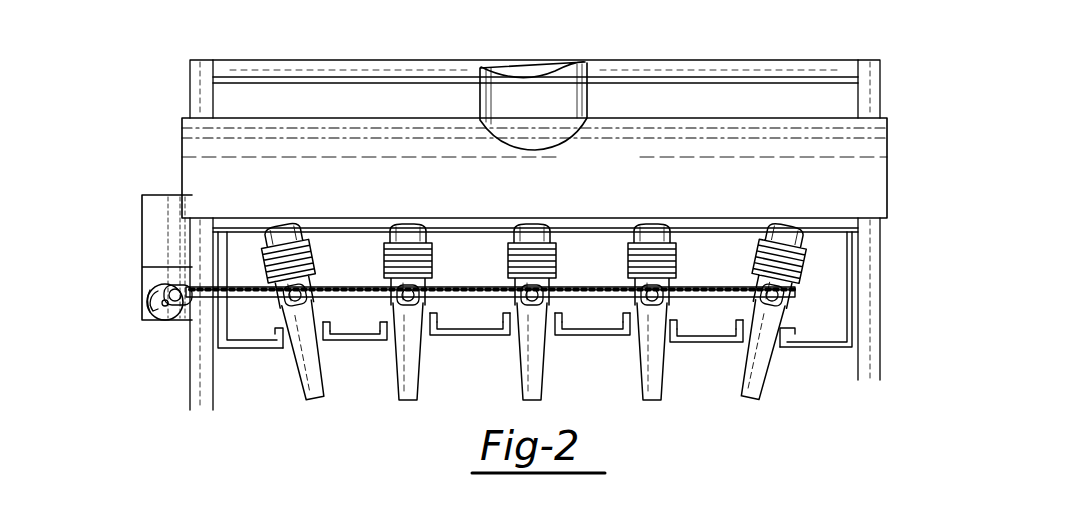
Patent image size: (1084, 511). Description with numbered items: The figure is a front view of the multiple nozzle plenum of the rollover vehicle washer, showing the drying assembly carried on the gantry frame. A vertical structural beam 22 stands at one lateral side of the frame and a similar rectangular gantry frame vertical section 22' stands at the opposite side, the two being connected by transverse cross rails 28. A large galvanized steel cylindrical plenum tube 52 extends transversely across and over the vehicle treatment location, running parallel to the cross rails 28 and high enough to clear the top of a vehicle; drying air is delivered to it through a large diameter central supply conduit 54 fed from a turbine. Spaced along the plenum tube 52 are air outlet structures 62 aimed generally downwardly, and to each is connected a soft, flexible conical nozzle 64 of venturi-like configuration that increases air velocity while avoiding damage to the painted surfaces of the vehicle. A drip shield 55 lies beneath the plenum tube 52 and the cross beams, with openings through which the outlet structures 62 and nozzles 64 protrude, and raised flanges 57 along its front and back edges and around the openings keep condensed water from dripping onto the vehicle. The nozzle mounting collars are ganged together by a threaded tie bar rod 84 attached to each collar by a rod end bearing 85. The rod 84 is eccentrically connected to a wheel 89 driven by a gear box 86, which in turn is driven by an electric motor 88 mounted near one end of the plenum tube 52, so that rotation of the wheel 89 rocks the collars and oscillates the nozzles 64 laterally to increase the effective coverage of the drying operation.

The vertical structural beam 22 is at (892, 209).
The gantry frame vertical section 22' is at (165, 235).
The transverse cross rails 28 is at (336, 68).
The plenum tube 52 is at (197, 172).
The central supply conduit 54 is at (568, 64).
The drip shield 55 is at (245, 349).
The raised flanges 57 is at (280, 338).
The air outlet structures 62 is at (308, 266).
The conical nozzles 64 is at (306, 383).
The threaded tie bar rod 84 is at (745, 299).
The rod end bearing 85 is at (633, 340).
The gear box 86 is at (148, 290).
The electric motor 88 is at (156, 228).
The wheel 89 is at (168, 322).